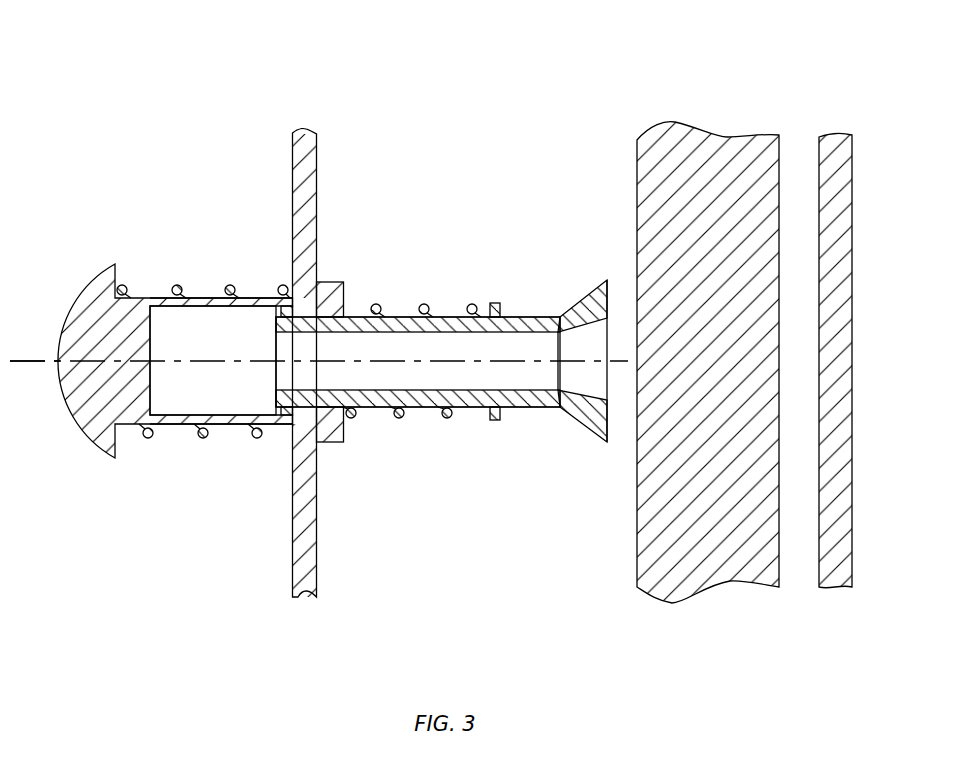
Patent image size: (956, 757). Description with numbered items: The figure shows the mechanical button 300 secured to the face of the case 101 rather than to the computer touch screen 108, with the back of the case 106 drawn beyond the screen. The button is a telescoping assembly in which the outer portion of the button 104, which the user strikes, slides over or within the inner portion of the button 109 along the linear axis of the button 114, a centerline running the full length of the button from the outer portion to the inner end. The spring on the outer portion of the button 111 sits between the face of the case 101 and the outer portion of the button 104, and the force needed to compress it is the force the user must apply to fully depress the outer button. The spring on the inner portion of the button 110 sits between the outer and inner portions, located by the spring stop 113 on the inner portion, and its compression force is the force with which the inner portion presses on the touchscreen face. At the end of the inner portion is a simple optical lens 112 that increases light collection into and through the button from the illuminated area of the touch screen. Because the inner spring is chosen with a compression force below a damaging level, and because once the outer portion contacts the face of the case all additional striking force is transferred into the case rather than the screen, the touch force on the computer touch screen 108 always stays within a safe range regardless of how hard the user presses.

The mechanical button 300 is at (369, 74).
The face of the case 101 is at (292, 154).
The outer portion of the button 104 is at (87, 287).
The back of the case 106 is at (852, 222).
The computer touch screen 108 is at (727, 135).
The inner portion of the button 109 is at (537, 316).
The spring on the inner portion of the button 110 is at (447, 415).
The spring on the outer portion of the button 111 is at (203, 436).
The simple optical lens 112 is at (596, 437).
The spring stop 113 is at (503, 418).
The linear axis of the button 114 is at (27, 363).